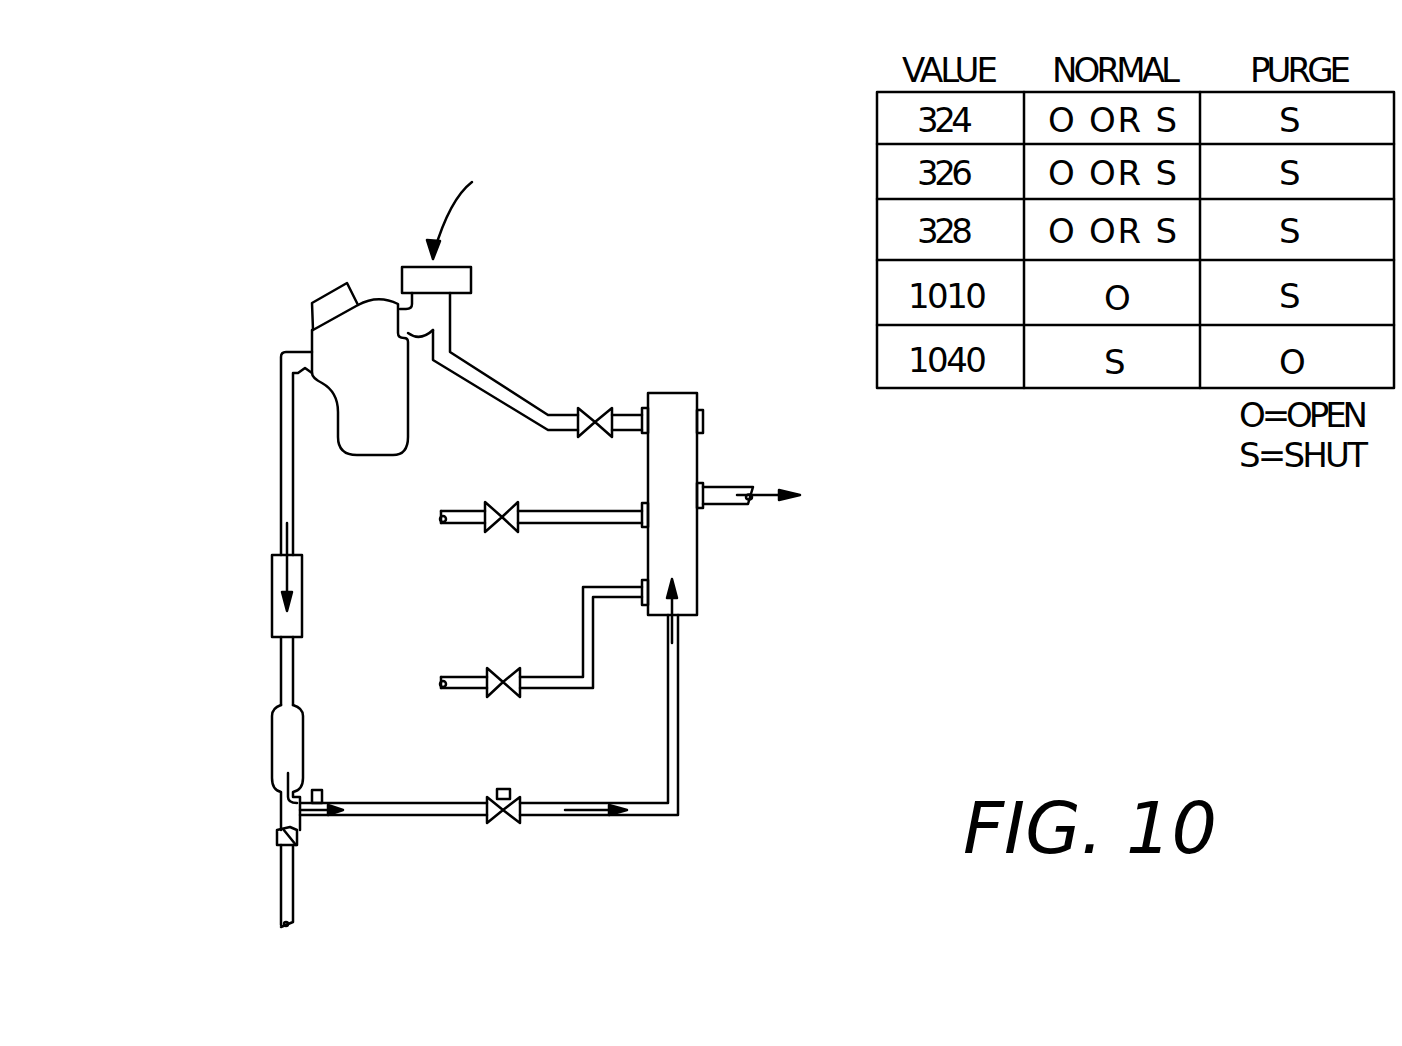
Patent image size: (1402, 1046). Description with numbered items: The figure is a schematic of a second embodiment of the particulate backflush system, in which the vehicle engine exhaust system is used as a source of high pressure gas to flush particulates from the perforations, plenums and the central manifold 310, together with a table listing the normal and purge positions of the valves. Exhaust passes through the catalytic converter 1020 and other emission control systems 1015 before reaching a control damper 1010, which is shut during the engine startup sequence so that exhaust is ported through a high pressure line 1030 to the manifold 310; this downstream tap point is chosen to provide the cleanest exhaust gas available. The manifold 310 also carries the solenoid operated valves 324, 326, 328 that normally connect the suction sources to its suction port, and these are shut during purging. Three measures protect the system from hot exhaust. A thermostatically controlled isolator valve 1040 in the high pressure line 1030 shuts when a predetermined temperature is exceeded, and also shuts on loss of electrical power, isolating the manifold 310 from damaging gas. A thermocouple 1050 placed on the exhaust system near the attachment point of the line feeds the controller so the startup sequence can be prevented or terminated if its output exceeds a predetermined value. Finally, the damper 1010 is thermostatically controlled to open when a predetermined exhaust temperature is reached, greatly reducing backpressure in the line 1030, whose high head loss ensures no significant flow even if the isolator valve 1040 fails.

The central manifold 310 is at (695, 545).
The solenoid operated valve 324 is at (502, 698).
The solenoid operated valve 326 is at (499, 532).
The solenoid operated valve 328 is at (593, 419).
The control damper 1010 is at (280, 835).
The emission control systems 1015 is at (257, 470).
The catalytic converter 1020 is at (272, 738).
The high pressure line 1030 is at (319, 814).
The isolator valve 1040 is at (497, 790).
The thermocouple 1050 is at (319, 789).